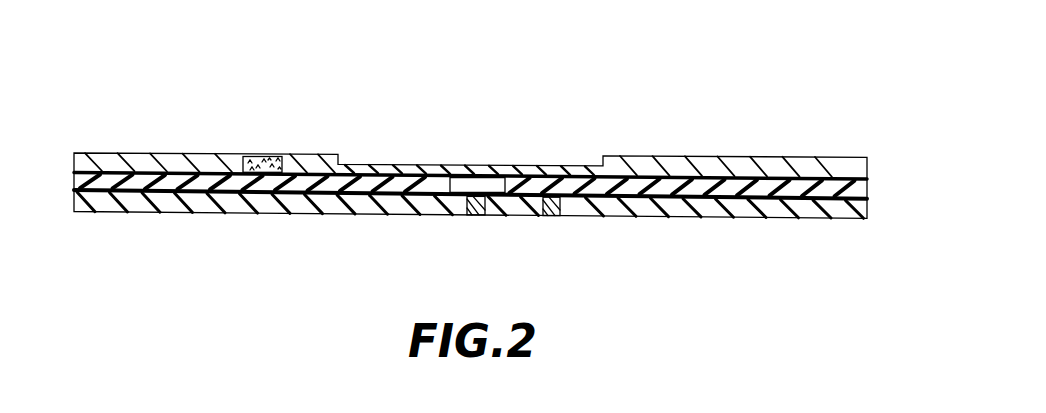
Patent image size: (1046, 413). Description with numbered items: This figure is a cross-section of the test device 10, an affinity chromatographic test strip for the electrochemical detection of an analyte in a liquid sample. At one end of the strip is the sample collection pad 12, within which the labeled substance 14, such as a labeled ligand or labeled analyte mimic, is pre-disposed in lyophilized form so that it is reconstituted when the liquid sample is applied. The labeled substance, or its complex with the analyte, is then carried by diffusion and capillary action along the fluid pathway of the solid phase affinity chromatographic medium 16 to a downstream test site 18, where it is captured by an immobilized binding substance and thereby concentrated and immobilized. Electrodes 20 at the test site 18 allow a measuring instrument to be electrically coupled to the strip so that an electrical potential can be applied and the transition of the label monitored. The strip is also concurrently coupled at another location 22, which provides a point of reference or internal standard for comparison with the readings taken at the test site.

The test device 10 is at (712, 130).
The sample collection pad 12 is at (170, 156).
The labeled substance 14 is at (263, 159).
The solid phase affinity chromatographic medium 16 is at (427, 165).
The test site 18 is at (475, 179).
The electrodes 20 is at (478, 216).
The another location 22 is at (553, 217).